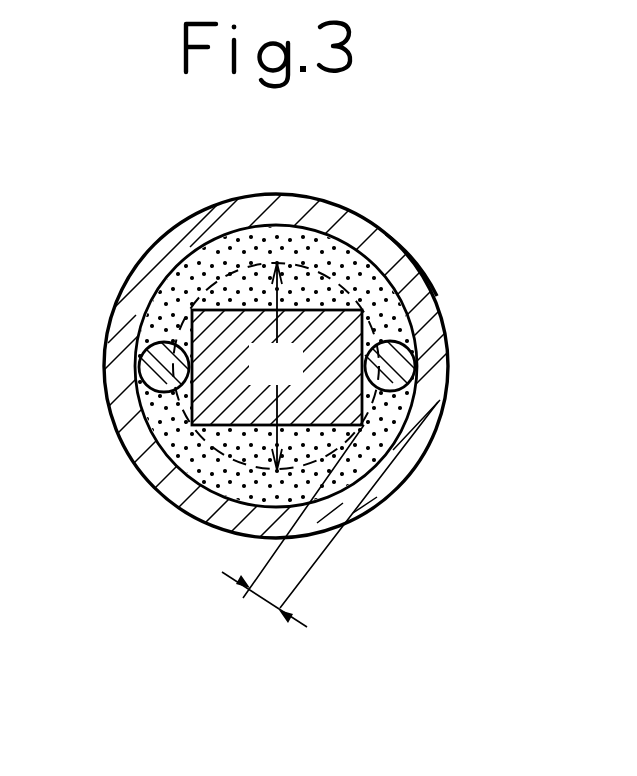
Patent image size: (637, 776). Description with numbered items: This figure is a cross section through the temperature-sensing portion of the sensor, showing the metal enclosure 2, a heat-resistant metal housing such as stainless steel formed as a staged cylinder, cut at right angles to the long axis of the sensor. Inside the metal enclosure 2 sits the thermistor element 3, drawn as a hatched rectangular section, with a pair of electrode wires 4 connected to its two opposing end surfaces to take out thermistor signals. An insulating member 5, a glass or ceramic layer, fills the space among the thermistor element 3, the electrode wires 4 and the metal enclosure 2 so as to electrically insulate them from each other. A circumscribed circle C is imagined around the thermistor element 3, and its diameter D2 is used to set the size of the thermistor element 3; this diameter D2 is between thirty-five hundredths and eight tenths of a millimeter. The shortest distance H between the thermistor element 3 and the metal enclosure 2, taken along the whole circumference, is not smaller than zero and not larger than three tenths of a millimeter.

The metal enclosure 2 is at (303, 198).
The thermistor element 3 is at (248, 318).
The electrode wires 4 is at (140, 380).
The insulating member 5 is at (408, 265).
The circumscribed circle C is at (352, 292).
The diameter of the circumscribed circle D2 is at (276, 366).
The distance between the thermistor element and the metal enclosure H is at (250, 594).